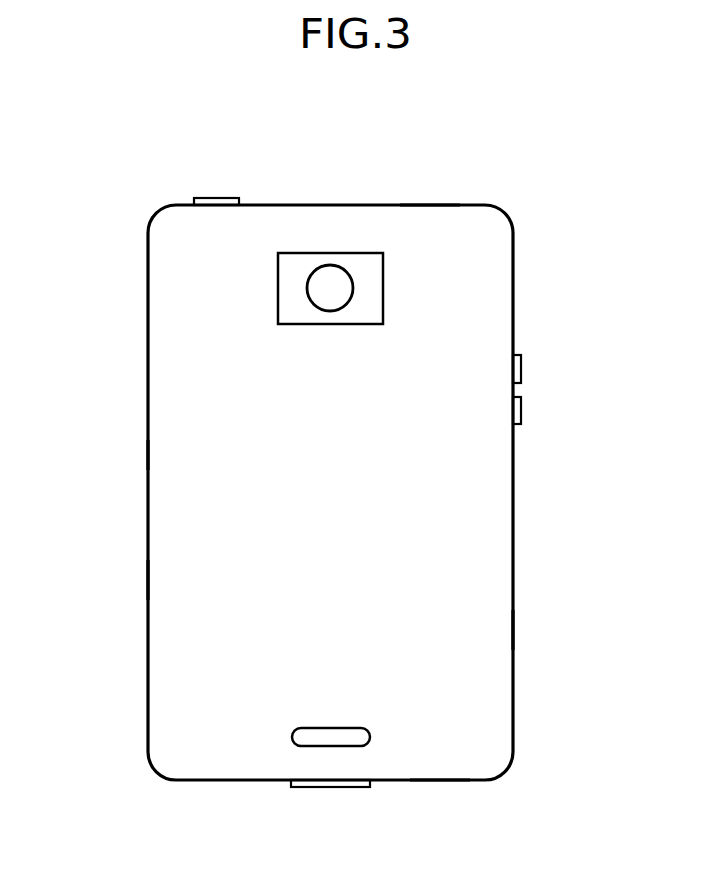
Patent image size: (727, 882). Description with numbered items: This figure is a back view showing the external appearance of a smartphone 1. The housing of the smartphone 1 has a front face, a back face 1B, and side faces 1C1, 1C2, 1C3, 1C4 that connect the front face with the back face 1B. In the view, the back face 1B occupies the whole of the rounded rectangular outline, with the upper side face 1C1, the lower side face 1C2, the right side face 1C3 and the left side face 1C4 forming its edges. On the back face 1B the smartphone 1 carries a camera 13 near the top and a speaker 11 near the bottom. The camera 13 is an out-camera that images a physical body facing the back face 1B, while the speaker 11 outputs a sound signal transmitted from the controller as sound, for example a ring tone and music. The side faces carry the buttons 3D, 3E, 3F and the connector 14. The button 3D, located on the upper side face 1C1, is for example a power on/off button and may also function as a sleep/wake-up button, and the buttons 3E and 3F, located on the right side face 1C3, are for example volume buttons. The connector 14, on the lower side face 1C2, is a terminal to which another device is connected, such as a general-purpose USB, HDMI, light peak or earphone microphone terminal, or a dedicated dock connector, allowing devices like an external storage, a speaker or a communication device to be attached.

The smartphone 1 is at (526, 178).
The back face 1B is at (177, 452).
The side face 1C1 is at (426, 205).
The side face 1C2 is at (440, 780).
The side face 1C3 is at (513, 633).
The side face 1C4 is at (148, 580).
The button 3D is at (218, 198).
The button 3E is at (521, 370).
The button 3F is at (521, 411).
The speaker 11 is at (292, 736).
The camera 13 is at (330, 288).
The connector 14 is at (324, 787).